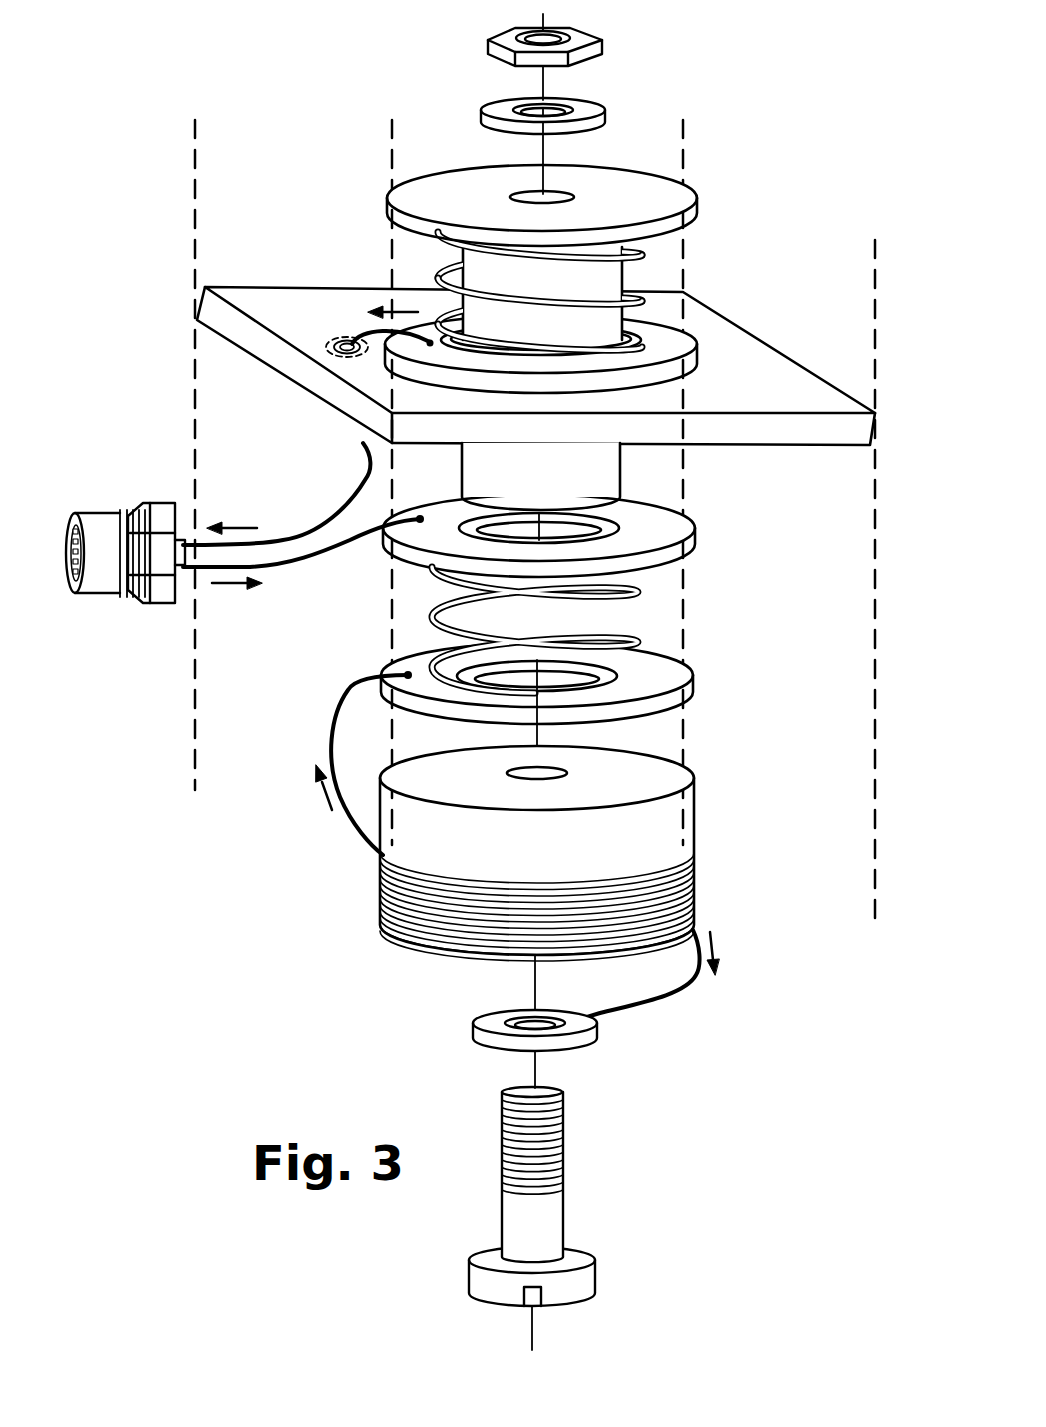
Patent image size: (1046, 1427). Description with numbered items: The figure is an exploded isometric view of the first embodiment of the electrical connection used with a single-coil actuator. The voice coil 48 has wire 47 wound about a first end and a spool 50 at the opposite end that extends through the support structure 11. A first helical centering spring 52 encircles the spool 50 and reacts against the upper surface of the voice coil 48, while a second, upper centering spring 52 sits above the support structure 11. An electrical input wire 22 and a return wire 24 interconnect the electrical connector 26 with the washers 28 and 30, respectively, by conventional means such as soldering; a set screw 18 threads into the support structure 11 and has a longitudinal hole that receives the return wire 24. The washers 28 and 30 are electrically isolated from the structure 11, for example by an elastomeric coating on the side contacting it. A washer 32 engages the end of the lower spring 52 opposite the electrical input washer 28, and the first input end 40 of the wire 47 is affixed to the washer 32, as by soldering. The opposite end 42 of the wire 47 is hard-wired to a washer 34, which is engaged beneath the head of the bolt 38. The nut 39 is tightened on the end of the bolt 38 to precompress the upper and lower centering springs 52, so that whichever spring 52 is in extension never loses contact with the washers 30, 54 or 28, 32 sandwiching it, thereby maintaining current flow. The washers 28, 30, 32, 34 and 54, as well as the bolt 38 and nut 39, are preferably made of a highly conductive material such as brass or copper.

The support structure 11 is at (442, 439).
The set screw 18 is at (266, 360).
The electrical input wire 22 is at (323, 557).
The return wire 24 is at (317, 530).
The electrical connector 26 is at (138, 603).
The electrical input washer 28 is at (653, 500).
The washer 30 is at (700, 355).
The washer 32 is at (687, 663).
The washer 34 is at (473, 1018).
The bolt 38 is at (563, 1222).
The nut 39 is at (602, 40).
The first input end of wire 40 is at (330, 705).
The opposite end of wire 42 is at (670, 992).
The wire 47 is at (383, 877).
The voice coil 48 is at (630, 792).
The spool 50 is at (552, 484).
The helical centering spring 52 is at (642, 253).
The washer 54 is at (492, 209).